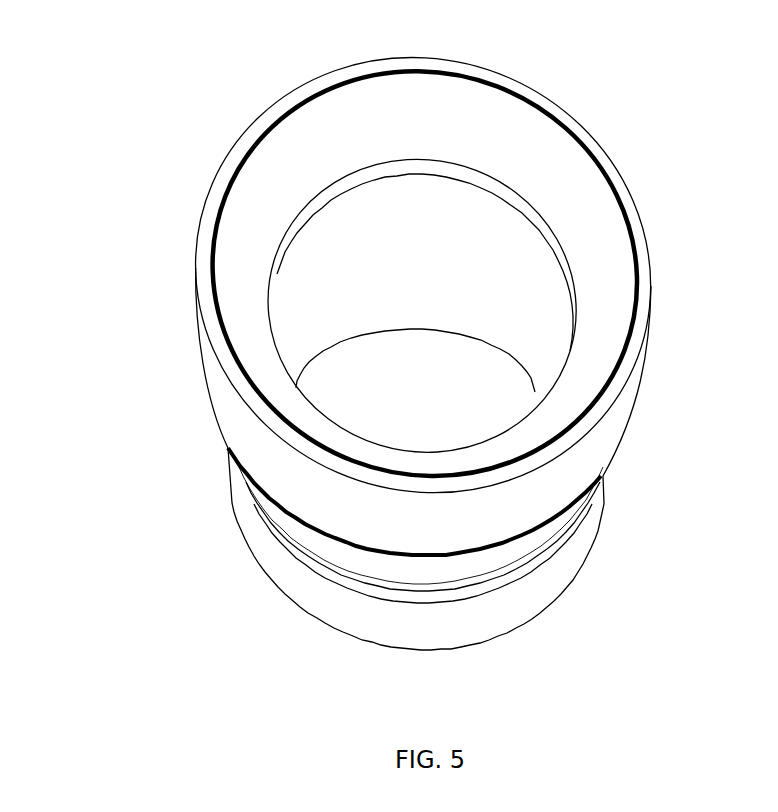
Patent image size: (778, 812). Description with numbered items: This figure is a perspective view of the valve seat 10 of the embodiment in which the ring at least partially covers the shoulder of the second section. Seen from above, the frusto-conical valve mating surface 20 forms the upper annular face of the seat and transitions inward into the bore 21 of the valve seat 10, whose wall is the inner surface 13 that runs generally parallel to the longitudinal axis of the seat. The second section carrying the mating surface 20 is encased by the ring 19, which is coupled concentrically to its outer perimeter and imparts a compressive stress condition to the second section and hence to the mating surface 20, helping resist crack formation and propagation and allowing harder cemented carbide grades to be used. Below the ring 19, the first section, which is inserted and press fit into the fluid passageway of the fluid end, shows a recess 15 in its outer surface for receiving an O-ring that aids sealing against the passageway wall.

The valve seat 10 is at (208, 53).
The inner surface 13 is at (437, 260).
The recess 15 is at (256, 490).
The ring 19 is at (444, 525).
The frusto-conical valve mating surface 20 is at (436, 132).
The bore 21 is at (436, 394).